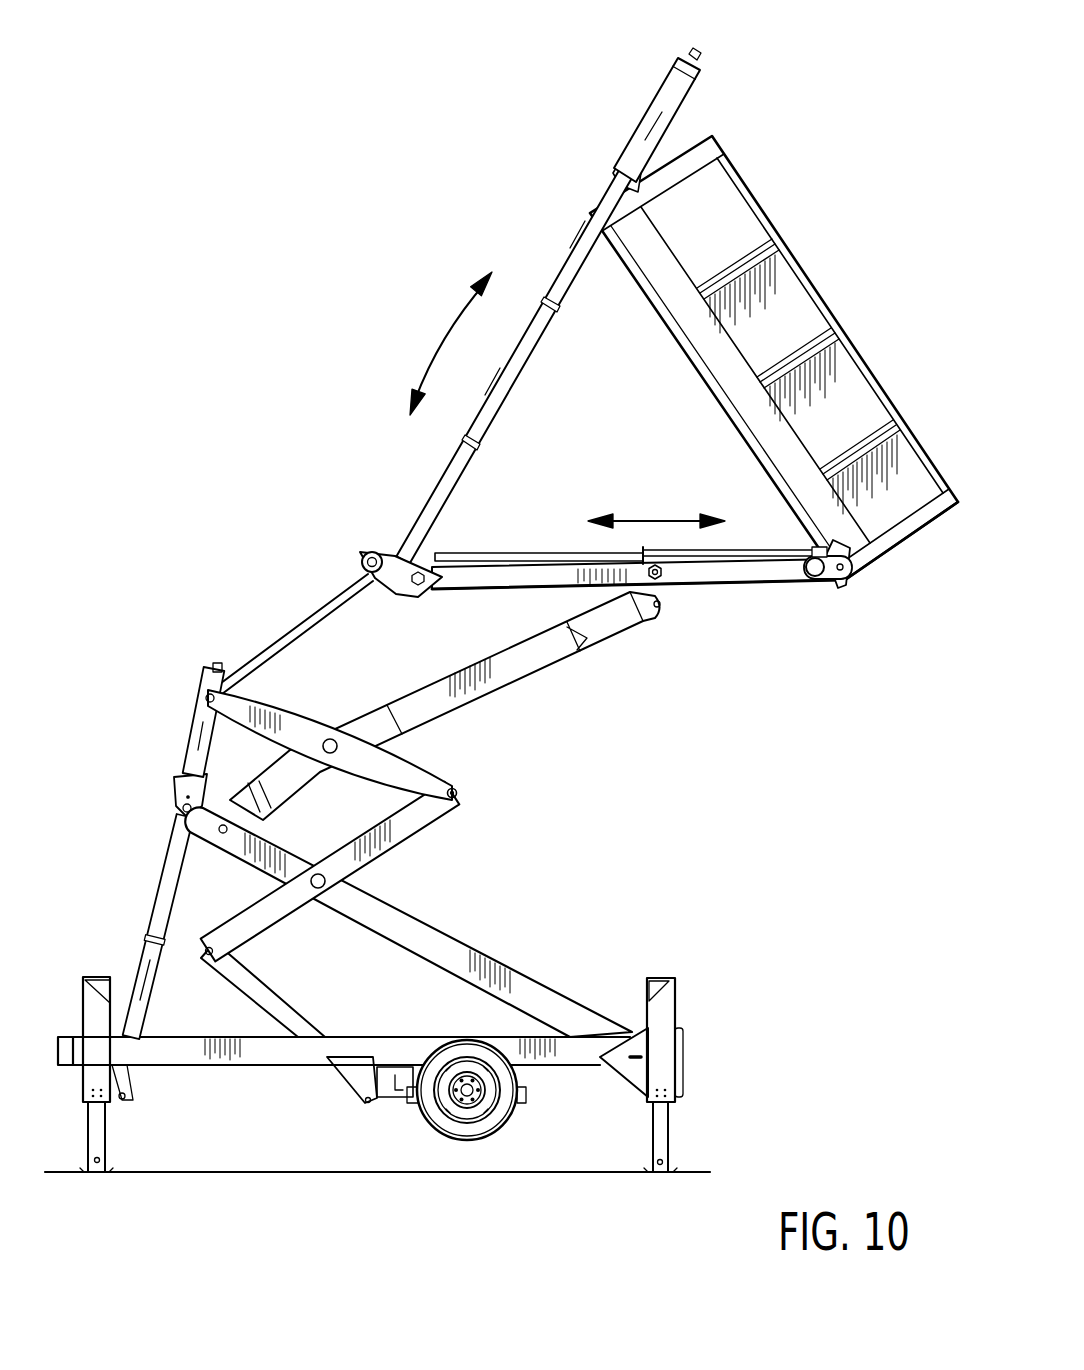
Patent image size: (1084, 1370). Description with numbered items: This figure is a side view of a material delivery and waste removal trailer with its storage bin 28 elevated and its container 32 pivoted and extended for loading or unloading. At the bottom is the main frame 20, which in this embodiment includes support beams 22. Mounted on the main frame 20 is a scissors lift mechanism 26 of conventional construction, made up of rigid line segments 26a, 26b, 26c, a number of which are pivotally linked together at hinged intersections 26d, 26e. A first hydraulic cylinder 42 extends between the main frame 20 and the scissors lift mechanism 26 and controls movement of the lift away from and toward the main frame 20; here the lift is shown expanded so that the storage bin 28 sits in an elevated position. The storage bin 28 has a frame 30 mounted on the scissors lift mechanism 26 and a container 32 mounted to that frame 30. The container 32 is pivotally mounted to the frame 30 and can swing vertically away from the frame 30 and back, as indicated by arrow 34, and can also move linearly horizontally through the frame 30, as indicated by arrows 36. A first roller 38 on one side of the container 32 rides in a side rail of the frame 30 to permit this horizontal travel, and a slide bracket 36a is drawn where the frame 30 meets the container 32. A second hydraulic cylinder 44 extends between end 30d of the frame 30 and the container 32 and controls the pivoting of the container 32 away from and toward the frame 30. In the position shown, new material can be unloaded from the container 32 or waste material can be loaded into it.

The main frame 20 is at (72, 1018).
The support beams 22 is at (207, 1065).
The scissors lift mechanism 26 is at (480, 828).
The rigid line segment 26a is at (410, 762).
The rigid line segment 26b is at (390, 851).
The rigid line segment 26c is at (537, 977).
The hinged intersection 26d is at (458, 793).
The hinged intersection 26e is at (318, 890).
The storage bin 28 is at (808, 183).
The frame of storage bin 30 is at (740, 588).
The end of frame of storage bin 30d is at (363, 553).
The container 32 is at (917, 527).
The arrow 34 is at (440, 340).
The arrows 36 is at (657, 515).
The slide bracket 36a is at (786, 575).
The first roller 38 is at (672, 588).
The first hydraulic cylinder 42 is at (163, 887).
The second hydraulic cylinder 44 is at (563, 277).